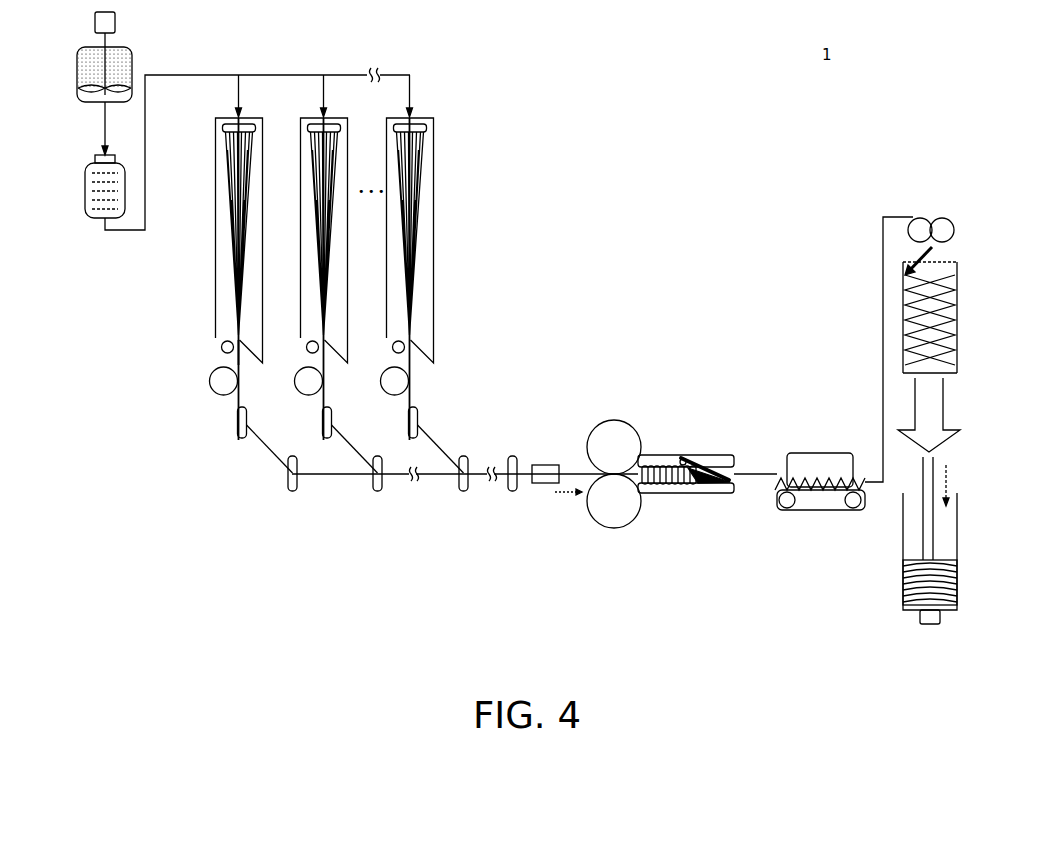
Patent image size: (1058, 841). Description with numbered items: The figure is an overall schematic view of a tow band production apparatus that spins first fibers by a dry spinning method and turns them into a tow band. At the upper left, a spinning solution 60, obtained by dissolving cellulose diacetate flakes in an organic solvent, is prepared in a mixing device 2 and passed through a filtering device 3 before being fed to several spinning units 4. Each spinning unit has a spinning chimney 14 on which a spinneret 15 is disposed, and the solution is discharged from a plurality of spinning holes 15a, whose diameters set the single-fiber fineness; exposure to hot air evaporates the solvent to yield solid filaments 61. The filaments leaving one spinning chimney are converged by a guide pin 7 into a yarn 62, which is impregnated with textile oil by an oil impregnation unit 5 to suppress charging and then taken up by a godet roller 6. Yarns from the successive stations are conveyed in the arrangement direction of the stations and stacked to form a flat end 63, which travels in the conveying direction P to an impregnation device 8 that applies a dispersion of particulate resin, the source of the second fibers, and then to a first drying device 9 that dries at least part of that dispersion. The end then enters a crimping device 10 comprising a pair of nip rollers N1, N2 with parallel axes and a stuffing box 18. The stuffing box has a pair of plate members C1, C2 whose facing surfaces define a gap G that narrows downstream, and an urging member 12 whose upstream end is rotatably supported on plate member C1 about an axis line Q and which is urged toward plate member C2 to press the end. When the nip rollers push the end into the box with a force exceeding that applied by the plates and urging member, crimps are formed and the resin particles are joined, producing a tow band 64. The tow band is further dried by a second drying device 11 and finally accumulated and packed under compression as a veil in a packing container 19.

The mixing device 2 is at (77, 68).
The spinning solution 60 is at (80, 90).
The filtering device 3 is at (85, 190).
The spinning units 4 is at (438, 92).
The spinneret 15 is at (210, 257).
The spinning holes 15a is at (222, 130).
The filaments 61 is at (228, 160).
The spinning chimney 14 is at (215, 222).
The oil impregnation unit 5 is at (221, 347).
The yarn 62 is at (237, 357).
The godet roller 6 is at (210, 388).
The guide pin 7 is at (238, 425).
The end 63 is at (466, 456).
The impregnation device 8 is at (513, 456).
The first drying device 9 is at (546, 465).
The conveying direction P is at (568, 499).
The nip roller N1 is at (620, 420).
The nip roller N2 is at (614, 528).
The stuffing box 18 is at (652, 494).
The crimping device 10 is at (710, 445).
The urging member 12 is at (705, 457).
The tow band 64 is at (748, 476).
The gap G is at (676, 494).
The plate member C1 is at (732, 462).
The plate member C2 is at (701, 494).
The axis line Q is at (686, 462).
The second drying device 11 is at (822, 445).
The packing container 19 is at (903, 584).